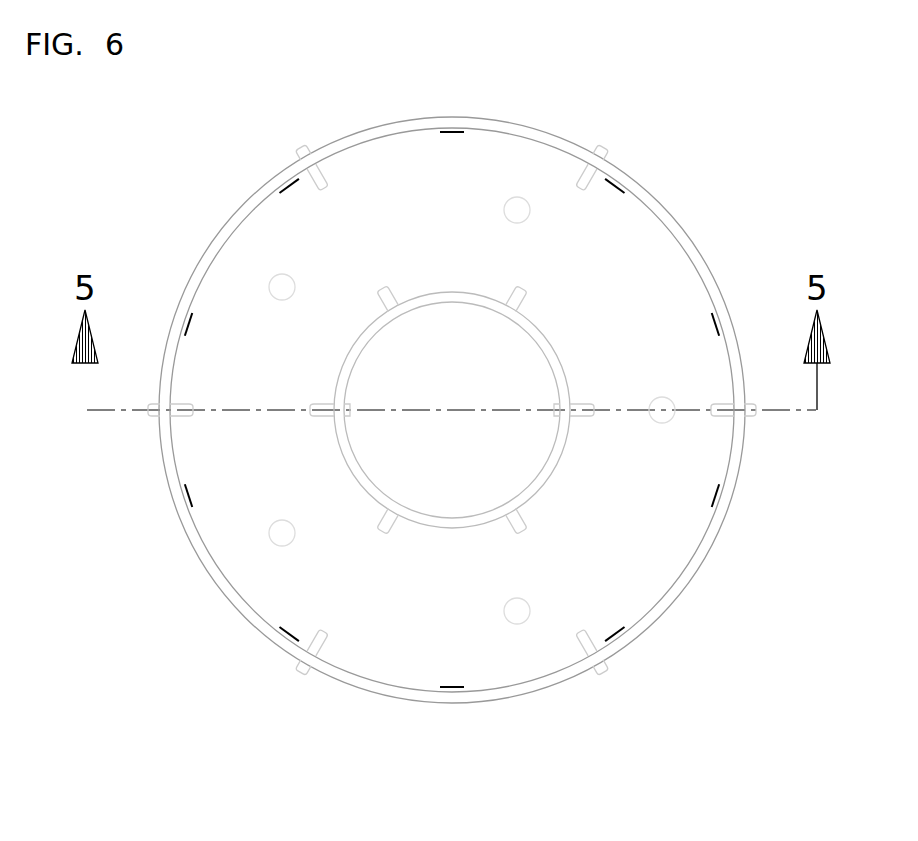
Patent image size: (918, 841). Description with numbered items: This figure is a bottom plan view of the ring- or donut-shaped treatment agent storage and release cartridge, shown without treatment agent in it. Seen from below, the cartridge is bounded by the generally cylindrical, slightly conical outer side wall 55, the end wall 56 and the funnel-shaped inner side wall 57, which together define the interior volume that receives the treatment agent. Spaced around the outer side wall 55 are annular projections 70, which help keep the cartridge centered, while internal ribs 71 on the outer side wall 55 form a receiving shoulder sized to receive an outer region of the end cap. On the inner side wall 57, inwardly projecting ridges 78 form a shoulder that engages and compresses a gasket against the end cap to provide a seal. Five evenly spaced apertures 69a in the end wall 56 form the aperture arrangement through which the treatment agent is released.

The outer side wall 55 is at (647, 189).
The end wall 56 is at (643, 544).
The inner side wall 57 is at (453, 520).
The spaced apertures 69a is at (285, 280).
The annular projections 70 is at (303, 150).
The internal ribs 71 is at (321, 180).
The inwardly projecting ridges 78 is at (388, 290).